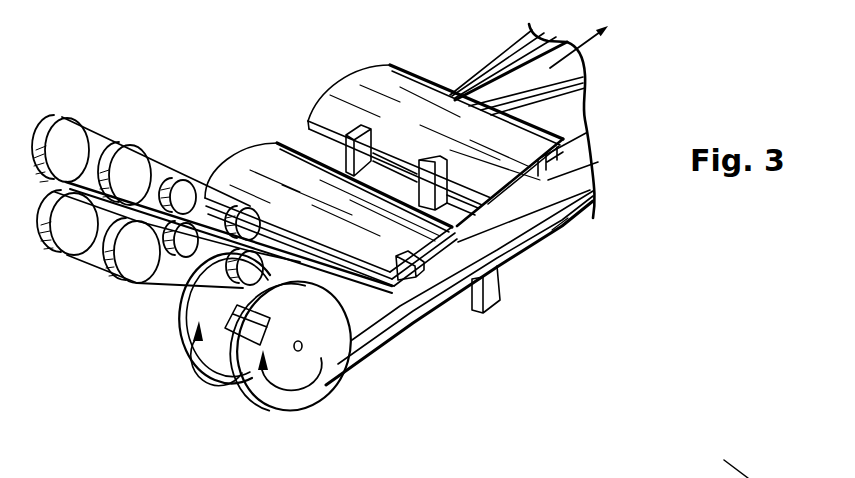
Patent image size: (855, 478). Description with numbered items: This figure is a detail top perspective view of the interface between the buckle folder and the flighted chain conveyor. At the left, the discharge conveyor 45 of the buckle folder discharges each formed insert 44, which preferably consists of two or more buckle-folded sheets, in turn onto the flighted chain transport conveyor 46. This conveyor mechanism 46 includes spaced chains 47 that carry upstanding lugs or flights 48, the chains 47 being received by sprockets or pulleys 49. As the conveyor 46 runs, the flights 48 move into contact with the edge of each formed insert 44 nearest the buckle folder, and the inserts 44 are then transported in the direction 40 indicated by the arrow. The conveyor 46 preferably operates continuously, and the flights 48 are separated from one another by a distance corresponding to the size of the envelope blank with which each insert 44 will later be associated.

The first direction 40 is at (579, 47).
The formed insert 44 is at (262, 150).
The discharge conveyor 45 is at (138, 124).
The flighted chain transport conveyor 46 is at (560, 236).
The chains 47 is at (493, 72).
The flights 48 is at (361, 127).
The sprockets or pulleys 49 is at (333, 392).